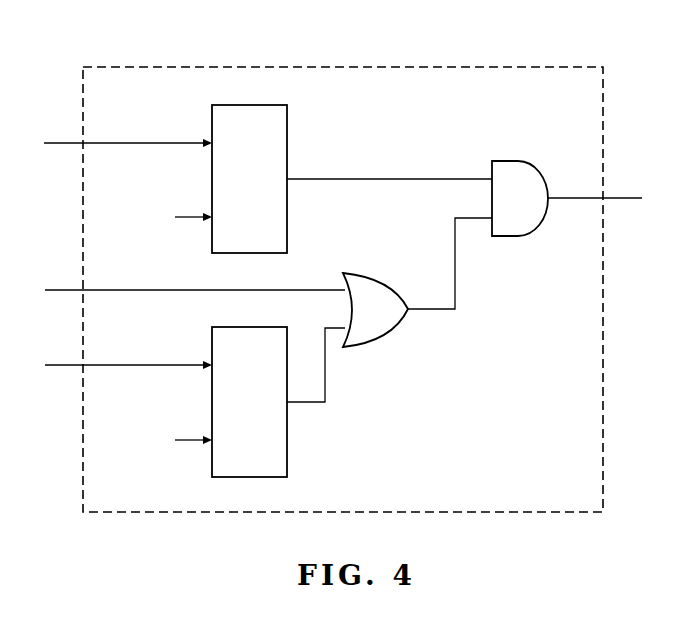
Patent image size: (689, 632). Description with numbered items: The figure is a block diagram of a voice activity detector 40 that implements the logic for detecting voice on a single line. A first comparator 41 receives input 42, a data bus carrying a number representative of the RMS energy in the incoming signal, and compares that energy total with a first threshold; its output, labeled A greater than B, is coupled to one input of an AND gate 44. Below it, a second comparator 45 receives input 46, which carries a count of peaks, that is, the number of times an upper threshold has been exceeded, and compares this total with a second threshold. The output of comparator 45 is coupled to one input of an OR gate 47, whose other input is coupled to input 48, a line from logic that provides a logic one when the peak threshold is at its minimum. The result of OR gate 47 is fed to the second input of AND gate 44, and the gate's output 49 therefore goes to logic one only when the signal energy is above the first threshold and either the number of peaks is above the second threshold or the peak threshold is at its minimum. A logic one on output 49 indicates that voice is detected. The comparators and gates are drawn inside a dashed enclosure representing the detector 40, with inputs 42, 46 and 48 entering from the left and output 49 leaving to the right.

The voice activity detector 40 is at (192, 65).
The first comparator 41 is at (286, 131).
The input 42 is at (60, 140).
The AND gate 44 is at (498, 158).
The second comparator 45 is at (285, 454).
The input 46 is at (60, 367).
The OR gate 47 is at (377, 277).
The input 48 is at (60, 287).
The output 49 is at (620, 195).